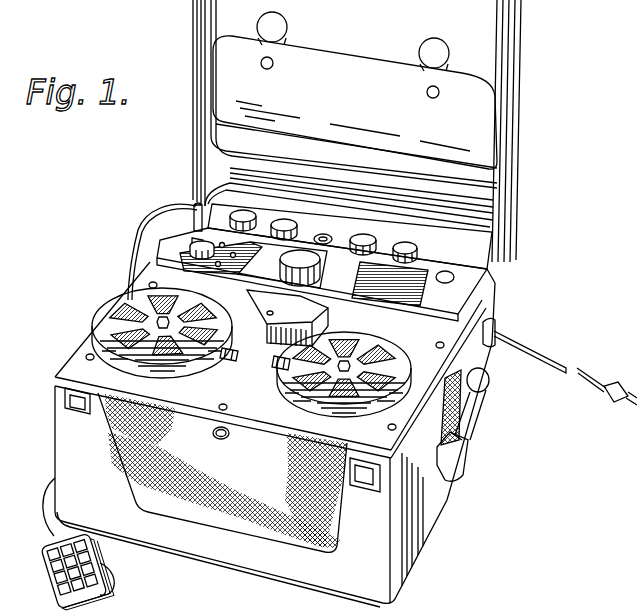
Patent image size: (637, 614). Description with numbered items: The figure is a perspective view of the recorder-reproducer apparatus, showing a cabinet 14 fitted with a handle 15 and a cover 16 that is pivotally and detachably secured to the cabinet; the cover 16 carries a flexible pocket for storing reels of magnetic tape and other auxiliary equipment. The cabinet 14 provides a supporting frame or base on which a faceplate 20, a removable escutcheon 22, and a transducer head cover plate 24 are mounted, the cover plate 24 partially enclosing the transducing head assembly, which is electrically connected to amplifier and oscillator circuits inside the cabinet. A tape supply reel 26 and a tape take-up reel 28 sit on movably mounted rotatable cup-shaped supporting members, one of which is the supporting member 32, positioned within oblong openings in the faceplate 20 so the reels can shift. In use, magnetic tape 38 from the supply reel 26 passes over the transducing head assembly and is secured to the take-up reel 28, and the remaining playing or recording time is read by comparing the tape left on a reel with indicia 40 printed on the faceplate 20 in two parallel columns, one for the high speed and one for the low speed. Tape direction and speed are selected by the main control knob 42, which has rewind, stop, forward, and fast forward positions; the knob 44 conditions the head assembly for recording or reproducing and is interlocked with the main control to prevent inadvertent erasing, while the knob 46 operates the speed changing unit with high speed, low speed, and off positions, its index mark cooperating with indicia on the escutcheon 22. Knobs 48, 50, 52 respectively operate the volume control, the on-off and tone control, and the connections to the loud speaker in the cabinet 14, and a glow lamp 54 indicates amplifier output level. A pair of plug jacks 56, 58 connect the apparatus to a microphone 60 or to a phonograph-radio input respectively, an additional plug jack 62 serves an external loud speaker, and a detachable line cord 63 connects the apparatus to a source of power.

The cabinet 14 is at (430, 522).
The handle 15 is at (476, 450).
The cover 16 is at (514, 126).
The faceplate 20 is at (80, 376).
The removable escutcheon 22 is at (420, 295).
The transducer head cover plate 24 is at (287, 318).
The tape supply reel 26 is at (128, 318).
The tape take-up reel 28 is at (400, 362).
The rotatable cup-shaped supporting member 32 is at (222, 441).
The magnetic tape 38 is at (242, 344).
The indicia 40 is at (270, 373).
The main control knob 42 is at (282, 265).
The knob 44 is at (286, 220).
The knob 46 is at (221, 265).
The knob 48 is at (250, 206).
The knob 50 is at (366, 234).
The knob 52 is at (407, 243).
The glow lamp 54 is at (325, 234).
The plug jack 56 is at (192, 252).
The plug jack 58 is at (196, 224).
The microphone 60 is at (43, 547).
The plug jack 62 is at (447, 270).
The detachable line cord 63 is at (527, 341).